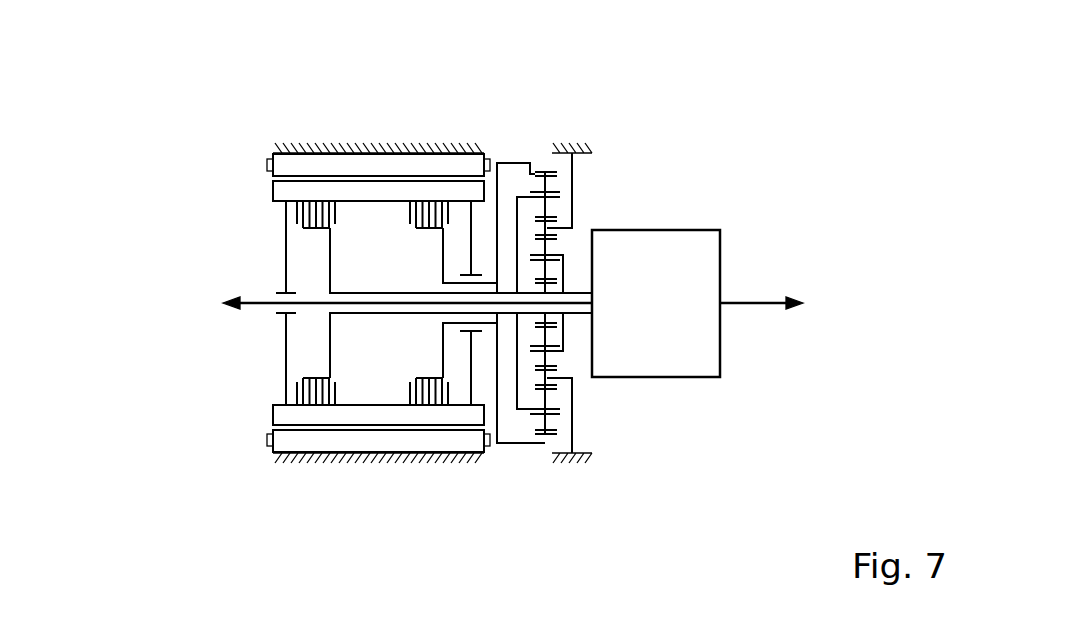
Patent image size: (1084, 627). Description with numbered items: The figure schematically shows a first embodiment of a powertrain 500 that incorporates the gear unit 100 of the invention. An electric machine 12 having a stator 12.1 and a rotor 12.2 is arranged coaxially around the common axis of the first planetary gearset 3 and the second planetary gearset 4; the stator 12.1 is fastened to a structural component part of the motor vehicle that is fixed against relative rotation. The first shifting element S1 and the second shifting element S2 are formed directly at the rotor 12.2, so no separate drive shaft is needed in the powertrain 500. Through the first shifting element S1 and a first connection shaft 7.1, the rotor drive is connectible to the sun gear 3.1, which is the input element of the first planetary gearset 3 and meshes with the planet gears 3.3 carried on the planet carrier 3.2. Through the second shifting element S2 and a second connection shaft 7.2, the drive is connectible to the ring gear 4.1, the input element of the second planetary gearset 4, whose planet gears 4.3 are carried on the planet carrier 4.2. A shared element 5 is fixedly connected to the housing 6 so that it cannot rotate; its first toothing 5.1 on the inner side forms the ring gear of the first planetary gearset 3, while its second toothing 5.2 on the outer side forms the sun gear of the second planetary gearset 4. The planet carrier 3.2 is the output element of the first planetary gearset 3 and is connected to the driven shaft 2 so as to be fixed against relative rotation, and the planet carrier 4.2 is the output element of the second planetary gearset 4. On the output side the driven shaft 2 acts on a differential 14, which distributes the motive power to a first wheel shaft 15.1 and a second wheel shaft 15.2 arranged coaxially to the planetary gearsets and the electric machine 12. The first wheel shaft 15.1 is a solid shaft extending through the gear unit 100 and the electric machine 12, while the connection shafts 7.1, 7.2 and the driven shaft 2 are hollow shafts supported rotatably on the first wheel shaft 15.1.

The gear unit 100 is at (663, 97).
The powertrain 500 is at (800, 97).
The driven shaft 2 is at (500, 306).
The first planetary gearset 3 is at (690, 389).
The sun gear 3.1 is at (538, 323).
The planet carrier 3.2 is at (562, 350).
The planet gears 3.3 is at (560, 360).
The second planetary gearset 4 is at (660, 221).
The ring gear 4.1 is at (543, 168).
The planet carrier 4.2 is at (521, 197).
The planet gears 4.3 is at (548, 182).
The shared element 5 is at (723, 364).
The first toothing 5.1 is at (538, 377).
The second toothing 5.2 is at (572, 226).
The housing 6 is at (568, 455).
The first connection shaft 7.1 is at (330, 350).
The second connection shaft 7.2 is at (442, 247).
The electric machine 12 is at (266, 231).
The stator 12.1 is at (315, 165).
The rotor 12.2 is at (283, 191).
The differential 14 is at (707, 247).
The first wheel shaft 15.1 is at (260, 303).
The second wheel shaft 15.2 is at (757, 305).
The first shifting element S1 is at (313, 229).
The second shifting element S2 is at (423, 195).